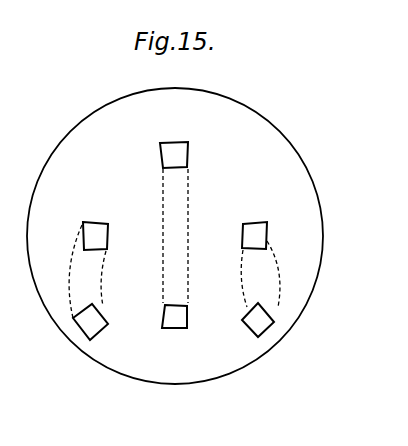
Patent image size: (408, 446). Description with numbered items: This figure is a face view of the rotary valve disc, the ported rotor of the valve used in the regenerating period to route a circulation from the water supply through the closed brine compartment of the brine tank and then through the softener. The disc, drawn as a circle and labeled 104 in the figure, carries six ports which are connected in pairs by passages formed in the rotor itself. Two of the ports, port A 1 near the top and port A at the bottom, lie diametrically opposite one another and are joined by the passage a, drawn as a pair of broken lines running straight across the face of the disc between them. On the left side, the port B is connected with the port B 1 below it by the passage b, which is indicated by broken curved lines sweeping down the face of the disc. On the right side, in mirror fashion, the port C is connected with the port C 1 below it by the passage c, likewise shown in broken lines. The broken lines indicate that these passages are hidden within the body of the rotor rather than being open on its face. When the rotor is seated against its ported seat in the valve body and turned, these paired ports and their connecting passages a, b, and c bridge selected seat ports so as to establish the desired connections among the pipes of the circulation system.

The disc / plate 104 is at (249, 364).
The rotor port A1 is at (186, 152).
The passage a is at (189, 206).
The rotor port A is at (186, 324).
The rotor port B is at (108, 238).
The passage b is at (104, 282).
The rotor port B1 is at (105, 330).
The rotor port C is at (262, 233).
The passage c is at (281, 270).
The rotor port C1 is at (272, 330).